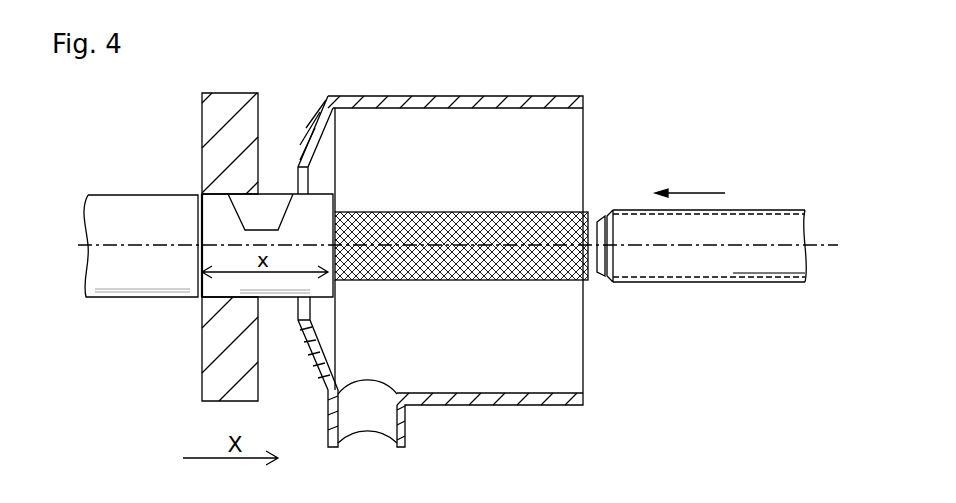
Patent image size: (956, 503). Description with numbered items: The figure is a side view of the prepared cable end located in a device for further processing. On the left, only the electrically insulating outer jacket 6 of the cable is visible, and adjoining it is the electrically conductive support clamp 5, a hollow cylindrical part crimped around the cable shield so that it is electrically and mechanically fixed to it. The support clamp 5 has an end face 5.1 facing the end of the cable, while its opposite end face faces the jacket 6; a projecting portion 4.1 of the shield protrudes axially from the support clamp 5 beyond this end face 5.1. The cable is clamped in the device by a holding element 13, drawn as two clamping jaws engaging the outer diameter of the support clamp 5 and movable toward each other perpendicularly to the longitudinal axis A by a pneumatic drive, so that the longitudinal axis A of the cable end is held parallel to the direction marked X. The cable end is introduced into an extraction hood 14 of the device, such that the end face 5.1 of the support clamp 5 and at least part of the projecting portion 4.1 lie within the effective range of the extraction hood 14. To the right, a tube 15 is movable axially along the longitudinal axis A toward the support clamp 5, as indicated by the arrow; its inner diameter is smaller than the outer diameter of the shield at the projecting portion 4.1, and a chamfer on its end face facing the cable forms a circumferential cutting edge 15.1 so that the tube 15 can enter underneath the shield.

The jacket 6 is at (122, 195).
The holding element 13 is at (202, 152).
The support clamp 5 is at (275, 300).
The end face 5.1 is at (338, 283).
The projecting portion 4.1 is at (487, 212).
The extraction hood 14 is at (482, 405).
The tube 15 is at (770, 222).
The cutting edge 15.1 is at (603, 280).
The longitudinal axis A is at (770, 245).